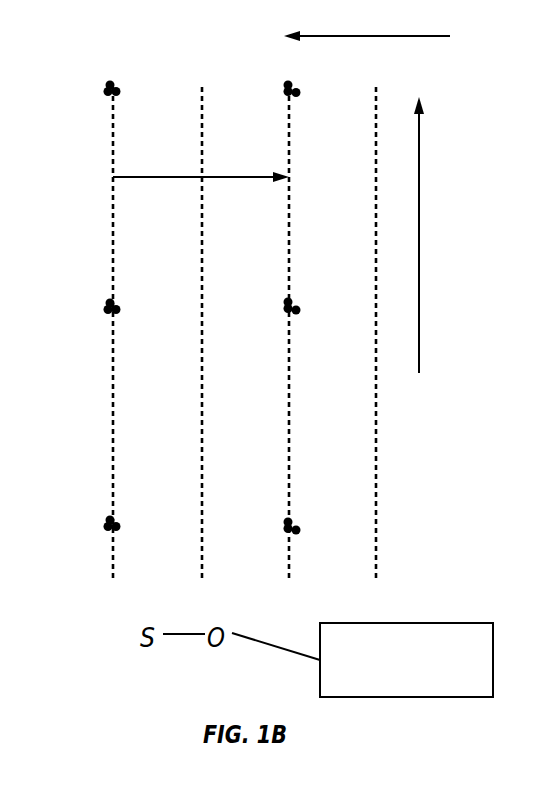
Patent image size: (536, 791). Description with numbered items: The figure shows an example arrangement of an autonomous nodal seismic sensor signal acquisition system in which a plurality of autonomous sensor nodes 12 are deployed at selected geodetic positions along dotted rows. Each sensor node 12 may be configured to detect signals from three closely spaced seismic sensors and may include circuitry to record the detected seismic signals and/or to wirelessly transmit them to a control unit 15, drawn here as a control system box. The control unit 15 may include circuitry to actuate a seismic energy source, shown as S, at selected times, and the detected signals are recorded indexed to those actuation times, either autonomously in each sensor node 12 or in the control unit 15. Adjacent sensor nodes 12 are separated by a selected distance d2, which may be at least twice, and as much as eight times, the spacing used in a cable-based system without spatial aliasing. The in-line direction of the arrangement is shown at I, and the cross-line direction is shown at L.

The autonomous sensor node 12 is at (72, 545).
The control unit 15 is at (463, 623).
The cross-line direction L is at (379, 38).
The in-line direction I is at (419, 256).
The selected distance d2 is at (201, 161).